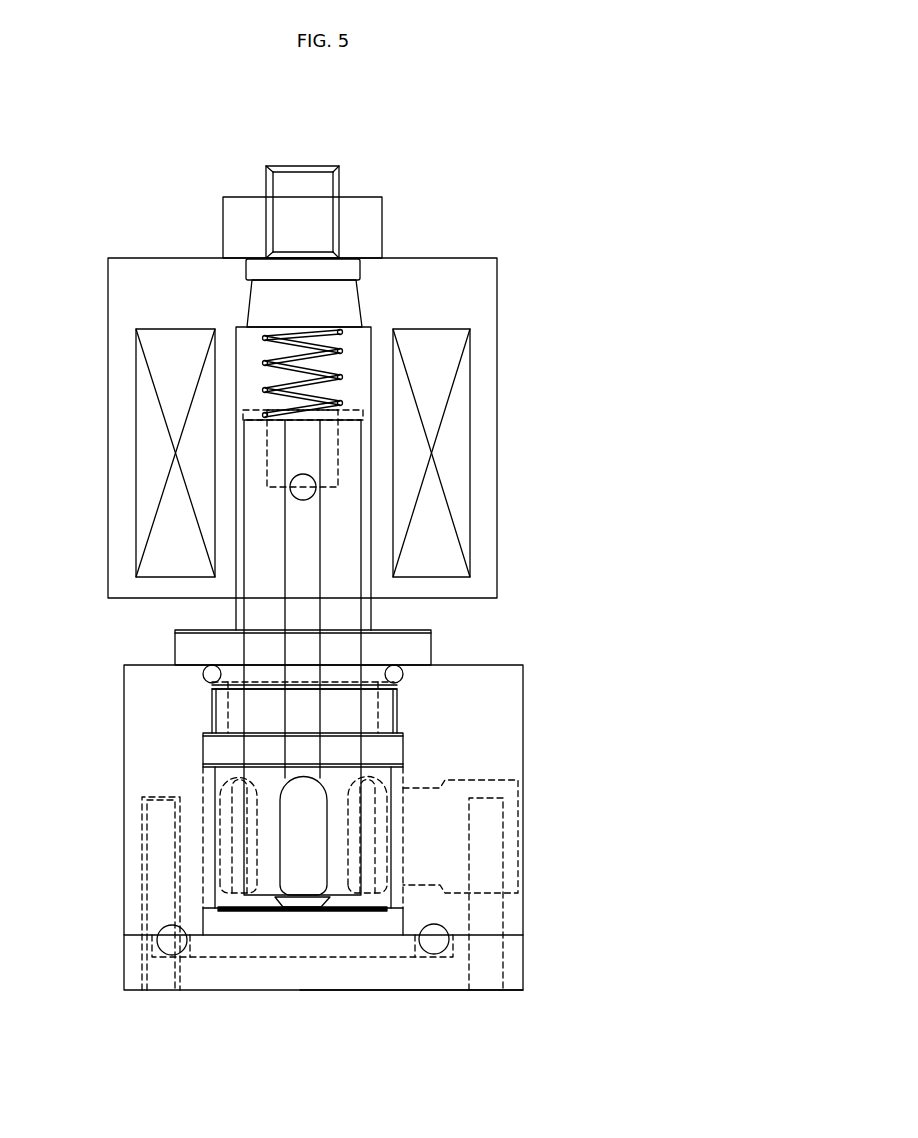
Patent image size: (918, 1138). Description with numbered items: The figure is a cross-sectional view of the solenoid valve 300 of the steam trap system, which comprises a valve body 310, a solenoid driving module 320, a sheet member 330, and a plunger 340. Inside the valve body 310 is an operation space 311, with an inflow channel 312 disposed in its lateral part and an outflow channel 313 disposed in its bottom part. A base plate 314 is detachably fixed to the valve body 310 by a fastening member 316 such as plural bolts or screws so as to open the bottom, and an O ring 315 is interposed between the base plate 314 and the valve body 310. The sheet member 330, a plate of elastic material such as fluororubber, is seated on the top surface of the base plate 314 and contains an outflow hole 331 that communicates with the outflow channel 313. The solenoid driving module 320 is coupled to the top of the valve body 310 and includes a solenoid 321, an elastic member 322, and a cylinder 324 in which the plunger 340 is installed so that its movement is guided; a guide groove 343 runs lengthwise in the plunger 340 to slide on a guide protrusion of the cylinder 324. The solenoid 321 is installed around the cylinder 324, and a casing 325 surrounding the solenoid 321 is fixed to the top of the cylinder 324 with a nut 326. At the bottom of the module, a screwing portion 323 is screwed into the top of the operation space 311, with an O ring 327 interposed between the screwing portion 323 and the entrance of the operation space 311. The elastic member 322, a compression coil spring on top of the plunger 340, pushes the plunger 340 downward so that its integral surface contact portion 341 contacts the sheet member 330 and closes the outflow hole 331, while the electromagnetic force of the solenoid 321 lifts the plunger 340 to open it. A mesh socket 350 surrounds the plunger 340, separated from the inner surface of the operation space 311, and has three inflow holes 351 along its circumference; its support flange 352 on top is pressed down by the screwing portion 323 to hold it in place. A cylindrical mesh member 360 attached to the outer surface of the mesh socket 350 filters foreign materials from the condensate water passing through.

The solenoid valve 300 is at (175, 116).
The valve body 310 is at (369, 856).
The operation space 311 is at (205, 778).
The inflow channel 312 is at (510, 830).
The outflow channel 313 is at (300, 983).
The base plate 314 is at (395, 985).
The O ring 315 is at (434, 950).
The fastening member 316 is at (505, 957).
The solenoid driving module 320 is at (513, 348).
The solenoid 321 is at (470, 423).
The elastic member 322 is at (342, 352).
The screwing portion 323 is at (397, 703).
The cylinder 324 is at (371, 504).
The casing 325 is at (497, 284).
The nut 326 is at (382, 215).
The O ring 327 is at (200, 680).
The sheet member 330 is at (221, 945).
The outflow hole 331 is at (293, 922).
The plunger 340 is at (407, 652).
The surface contact portion 341 is at (320, 911).
The guide groove 343 is at (307, 566).
The mesh socket 350 is at (219, 841).
The inflow hole 351 is at (295, 858).
The support flange 352 is at (193, 748).
The mesh member 360 is at (212, 831).